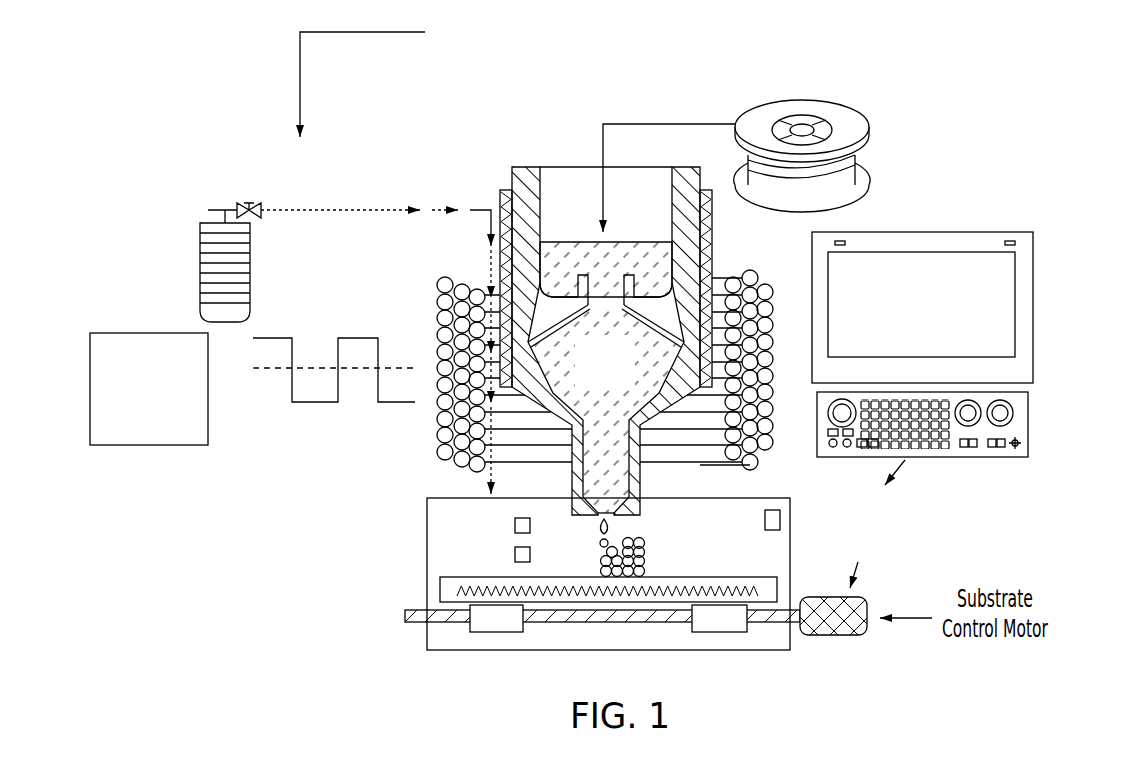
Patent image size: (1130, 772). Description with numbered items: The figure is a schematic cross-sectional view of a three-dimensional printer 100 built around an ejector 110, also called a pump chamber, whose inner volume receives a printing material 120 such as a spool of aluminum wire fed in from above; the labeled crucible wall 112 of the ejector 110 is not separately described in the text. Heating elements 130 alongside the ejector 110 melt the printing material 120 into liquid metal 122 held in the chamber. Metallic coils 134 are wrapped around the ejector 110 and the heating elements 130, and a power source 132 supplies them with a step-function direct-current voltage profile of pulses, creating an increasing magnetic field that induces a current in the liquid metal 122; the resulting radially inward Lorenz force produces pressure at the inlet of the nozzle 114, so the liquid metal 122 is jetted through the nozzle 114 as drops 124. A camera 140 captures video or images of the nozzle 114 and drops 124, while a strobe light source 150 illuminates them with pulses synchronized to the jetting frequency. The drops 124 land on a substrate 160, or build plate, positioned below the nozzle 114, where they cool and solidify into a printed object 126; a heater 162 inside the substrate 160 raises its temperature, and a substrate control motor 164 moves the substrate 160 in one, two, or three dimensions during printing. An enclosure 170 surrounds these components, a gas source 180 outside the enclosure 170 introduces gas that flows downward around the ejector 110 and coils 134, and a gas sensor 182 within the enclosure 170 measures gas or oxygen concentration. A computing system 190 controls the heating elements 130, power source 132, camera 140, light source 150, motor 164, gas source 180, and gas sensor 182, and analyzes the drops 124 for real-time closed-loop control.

The 3D printer 100 is at (197, 110).
The ejector 110 is at (601, 296).
The crucible wall 112 is at (528, 172).
The nozzle 114 is at (582, 517).
The printing material 120 is at (815, 100).
The liquid metal 122 is at (605, 463).
The drops 124 is at (614, 528).
The 3D object 126 is at (640, 548).
The heating elements 130 is at (714, 248).
The power source 132 is at (160, 445).
The metallic coils 134 is at (440, 287).
The camera 140 is at (515, 525).
The light source 150 is at (515, 553).
The substrate 160 is at (572, 567).
The heater 162 is at (735, 592).
The substrate control motor 164 is at (867, 610).
The enclosure 170 is at (427, 525).
The gas source 180 is at (200, 232).
The gas sensor 182 is at (775, 508).
The computing system 190 is at (1030, 418).